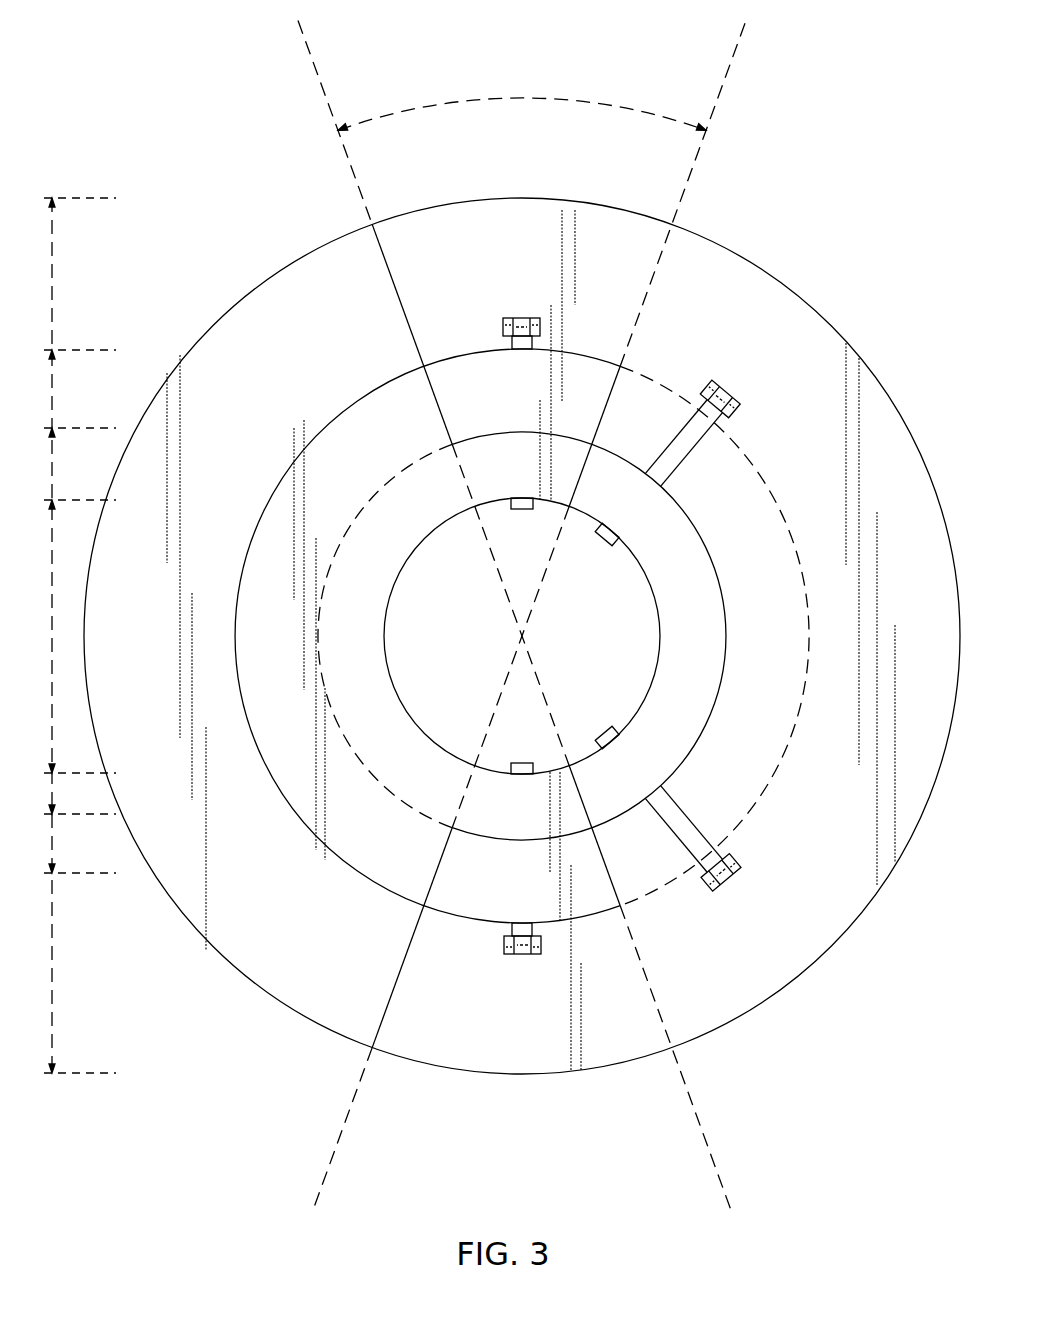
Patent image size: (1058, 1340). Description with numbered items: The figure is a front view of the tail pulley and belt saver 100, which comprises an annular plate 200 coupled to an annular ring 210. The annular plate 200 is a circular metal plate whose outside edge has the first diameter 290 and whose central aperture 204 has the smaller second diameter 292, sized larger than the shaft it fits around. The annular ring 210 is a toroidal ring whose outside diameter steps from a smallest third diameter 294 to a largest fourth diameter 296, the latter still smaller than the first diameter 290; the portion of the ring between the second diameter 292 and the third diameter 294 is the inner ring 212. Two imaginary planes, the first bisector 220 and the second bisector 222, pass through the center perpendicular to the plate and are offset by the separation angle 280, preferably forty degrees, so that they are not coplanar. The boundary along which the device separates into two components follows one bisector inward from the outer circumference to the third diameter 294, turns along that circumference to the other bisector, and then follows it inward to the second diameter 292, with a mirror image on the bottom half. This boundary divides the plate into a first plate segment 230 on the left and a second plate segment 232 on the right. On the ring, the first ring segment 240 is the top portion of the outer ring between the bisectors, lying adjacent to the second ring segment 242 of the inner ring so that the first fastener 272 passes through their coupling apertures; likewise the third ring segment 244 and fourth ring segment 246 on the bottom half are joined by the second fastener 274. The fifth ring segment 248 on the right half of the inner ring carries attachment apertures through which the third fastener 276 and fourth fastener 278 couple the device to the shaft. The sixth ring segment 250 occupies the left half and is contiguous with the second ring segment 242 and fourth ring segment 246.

The tail pulley and belt saver 100 is at (146, 170).
The annular plate 200 is at (905, 850).
The central aperture 204 is at (633, 713).
The annular ring 210 is at (393, 471).
The inner ring 212 is at (505, 639).
The first bisector 220 is at (535, 610).
The second bisector 222 is at (501, 610).
The first plate segment 230 is at (280, 985).
The second plate segment 232 is at (752, 992).
The first ring segment 240 is at (427, 566).
The second ring segment 242 is at (589, 603).
The third ring segment 244 is at (533, 921).
The fourth ring segment 246 is at (512, 817).
The fifth ring segment 248 is at (686, 706).
The sixth ring segment 250 is at (315, 640).
The first fastener 272 is at (518, 323).
The second fastener 274 is at (520, 955).
The third fastener 276 is at (698, 407).
The fourth fastener 278 is at (723, 880).
The separation angle 280 is at (522, 103).
The first diameter 290 is at (80, 635).
The second diameter 292 is at (80, 637).
The third diameter 294 is at (80, 635).
The fourth diameter 296 is at (80, 625).